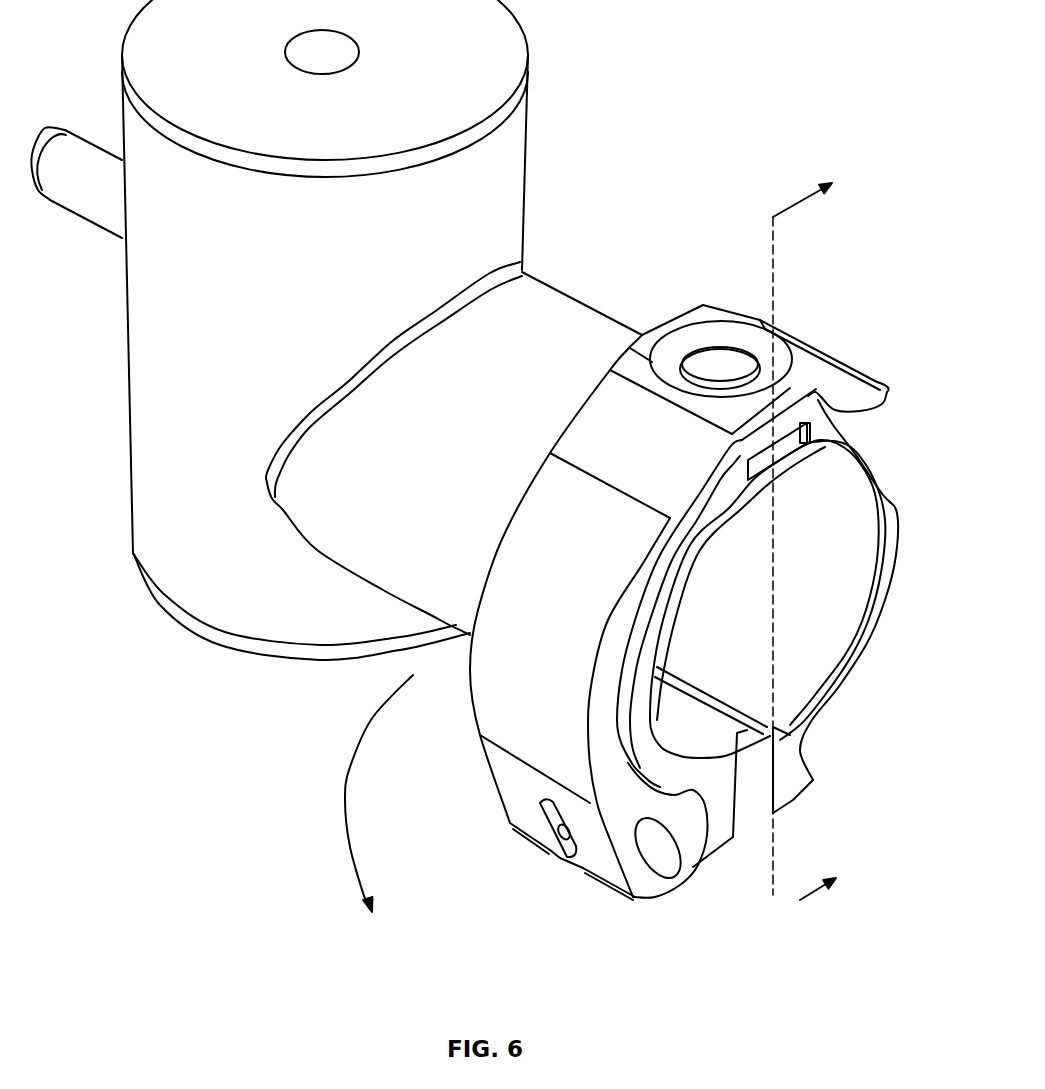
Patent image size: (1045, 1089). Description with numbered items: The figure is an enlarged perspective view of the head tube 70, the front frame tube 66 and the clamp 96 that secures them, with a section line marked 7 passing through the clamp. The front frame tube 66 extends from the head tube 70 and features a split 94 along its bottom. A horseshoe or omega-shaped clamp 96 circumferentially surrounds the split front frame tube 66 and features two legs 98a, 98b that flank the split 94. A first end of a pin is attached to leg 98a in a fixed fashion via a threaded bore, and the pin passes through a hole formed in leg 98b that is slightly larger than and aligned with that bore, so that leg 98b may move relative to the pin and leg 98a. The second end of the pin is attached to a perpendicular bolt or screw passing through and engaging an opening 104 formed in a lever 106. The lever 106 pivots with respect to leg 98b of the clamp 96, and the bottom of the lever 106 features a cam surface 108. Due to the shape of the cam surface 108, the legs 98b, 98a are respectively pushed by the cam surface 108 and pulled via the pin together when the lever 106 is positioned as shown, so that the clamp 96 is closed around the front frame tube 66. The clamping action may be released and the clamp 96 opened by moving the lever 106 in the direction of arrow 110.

The head tube 70 is at (527, 165).
The front frame tube 66 is at (568, 296).
The lever 106 is at (473, 716).
The clamp 96 is at (870, 617).
The split 94 is at (765, 710).
The leg 98a is at (788, 790).
The leg 98b is at (710, 860).
The cam surface 108 is at (658, 897).
The opening 104 is at (635, 897).
The arrow 110 is at (345, 795).
The section line 7- 7 is at (815, 532).